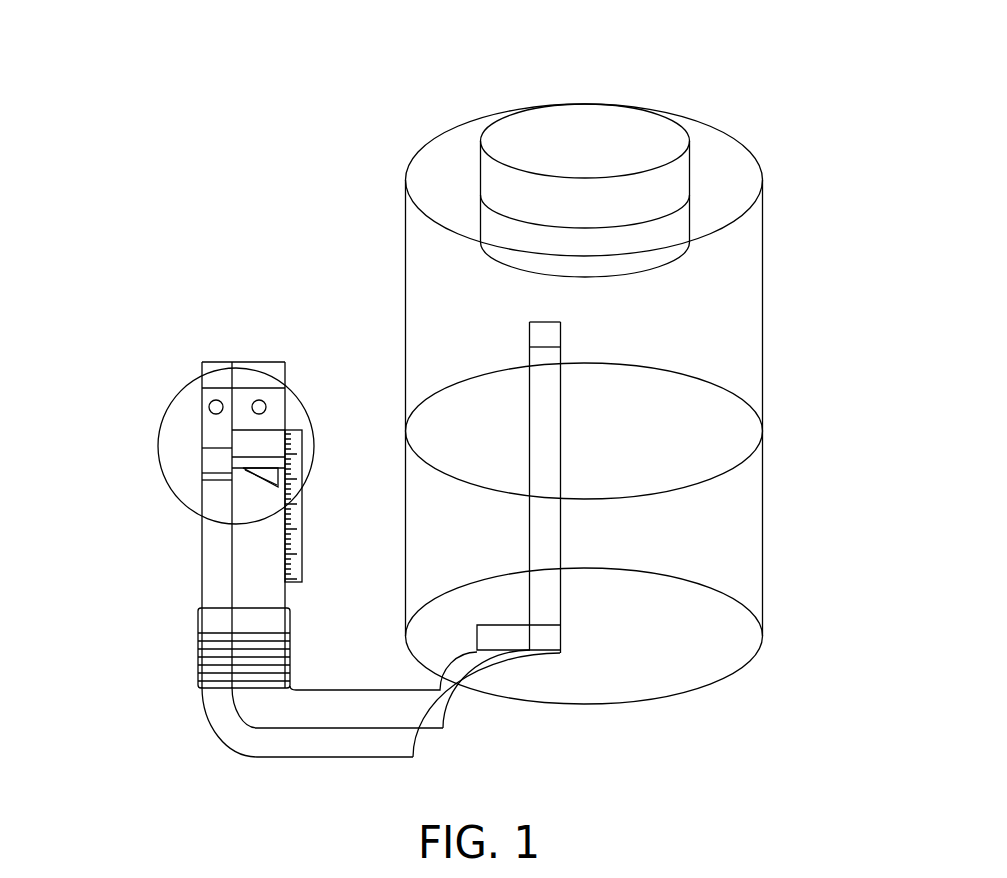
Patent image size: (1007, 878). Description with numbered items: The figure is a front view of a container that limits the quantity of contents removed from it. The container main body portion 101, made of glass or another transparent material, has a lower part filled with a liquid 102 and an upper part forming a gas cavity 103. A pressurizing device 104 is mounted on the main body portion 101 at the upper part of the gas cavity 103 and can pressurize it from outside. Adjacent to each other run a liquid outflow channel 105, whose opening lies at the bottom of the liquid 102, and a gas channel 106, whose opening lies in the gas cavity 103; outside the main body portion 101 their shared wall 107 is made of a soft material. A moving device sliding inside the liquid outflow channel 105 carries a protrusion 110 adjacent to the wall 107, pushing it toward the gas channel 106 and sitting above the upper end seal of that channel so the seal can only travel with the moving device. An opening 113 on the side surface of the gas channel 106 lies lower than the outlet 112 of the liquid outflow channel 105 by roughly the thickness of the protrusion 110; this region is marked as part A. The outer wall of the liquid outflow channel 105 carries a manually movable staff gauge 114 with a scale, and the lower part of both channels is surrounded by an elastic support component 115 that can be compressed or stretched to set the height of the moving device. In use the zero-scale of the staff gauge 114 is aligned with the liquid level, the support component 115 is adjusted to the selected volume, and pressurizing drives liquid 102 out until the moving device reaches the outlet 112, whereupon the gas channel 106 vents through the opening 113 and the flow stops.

The container main body portion 101 is at (632, 370).
The liquid 102 is at (630, 568).
The gas cavity 103 is at (509, 349).
The pressurizing device 104 is at (629, 143).
The liquid outflow channel 105 is at (339, 684).
The gas channel 106 is at (408, 536).
The wall 107 is at (176, 525).
The protrusion 110 is at (176, 477).
The outlet 112 is at (282, 360).
The opening 113 is at (174, 363).
The staff gauge 114 is at (337, 506).
The support component 115 is at (191, 658).
The part A is at (168, 407).